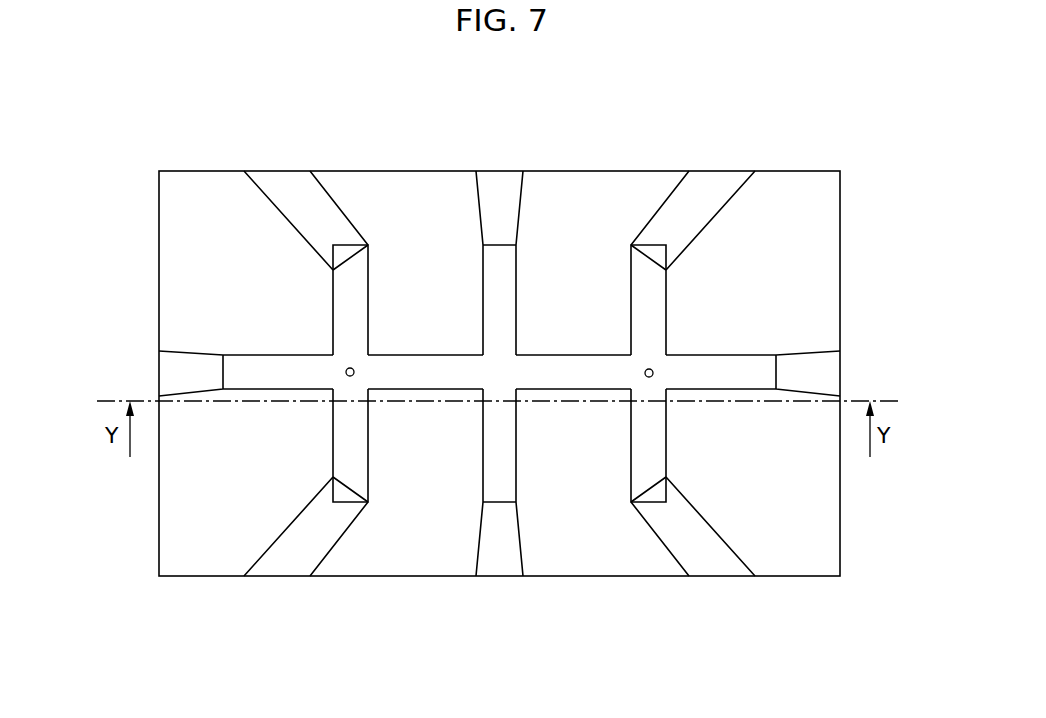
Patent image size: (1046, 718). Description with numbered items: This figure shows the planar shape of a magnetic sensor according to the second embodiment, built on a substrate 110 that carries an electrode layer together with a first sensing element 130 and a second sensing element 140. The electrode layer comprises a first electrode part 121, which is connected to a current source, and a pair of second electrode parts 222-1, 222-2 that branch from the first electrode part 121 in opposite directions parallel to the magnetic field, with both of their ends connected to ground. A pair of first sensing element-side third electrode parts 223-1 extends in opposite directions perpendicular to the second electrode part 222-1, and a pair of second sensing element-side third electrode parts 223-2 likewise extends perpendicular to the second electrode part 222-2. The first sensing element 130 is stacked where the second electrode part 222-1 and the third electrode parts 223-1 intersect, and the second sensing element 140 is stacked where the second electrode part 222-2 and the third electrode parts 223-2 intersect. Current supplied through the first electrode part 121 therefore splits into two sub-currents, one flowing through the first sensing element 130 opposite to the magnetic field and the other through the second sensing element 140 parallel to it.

The substrate 110 is at (202, 207).
The first electrode part 121 is at (510, 278).
The first sensing element 130 is at (355, 369).
The second sensing element 140 is at (644, 377).
The second electrode part 222-1 is at (420, 373).
The second electrode part 222-2 is at (583, 367).
The first sensing element-side third electrode part 223-1 is at (347, 305).
The second sensing element-side third electrode part 223-2 is at (652, 293).